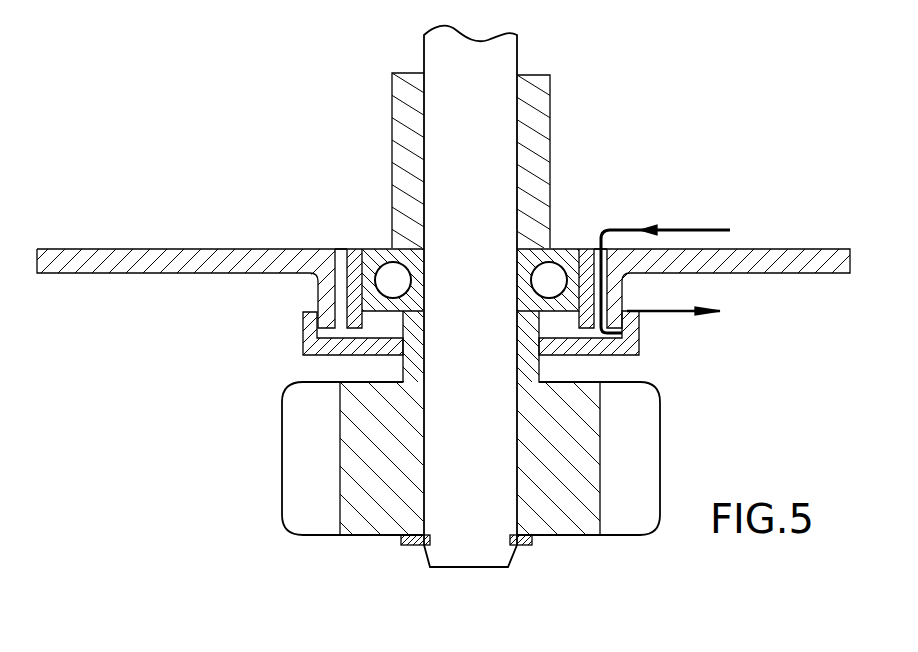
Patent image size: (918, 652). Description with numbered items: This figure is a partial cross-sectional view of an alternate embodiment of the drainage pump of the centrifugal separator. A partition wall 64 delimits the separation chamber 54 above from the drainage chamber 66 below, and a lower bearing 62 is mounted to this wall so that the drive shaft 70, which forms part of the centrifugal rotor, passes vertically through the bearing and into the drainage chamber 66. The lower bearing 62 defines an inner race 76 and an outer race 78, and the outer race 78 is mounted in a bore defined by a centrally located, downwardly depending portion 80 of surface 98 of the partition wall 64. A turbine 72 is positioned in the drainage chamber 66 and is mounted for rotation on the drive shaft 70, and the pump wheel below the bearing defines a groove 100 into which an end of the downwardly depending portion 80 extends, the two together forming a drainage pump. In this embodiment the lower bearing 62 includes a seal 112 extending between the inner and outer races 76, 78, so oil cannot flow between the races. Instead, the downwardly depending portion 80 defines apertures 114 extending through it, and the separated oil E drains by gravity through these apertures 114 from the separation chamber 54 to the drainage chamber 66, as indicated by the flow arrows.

The separation chamber 54 is at (730, 49).
The surface 98 is at (112, 249).
The partition wall 64 is at (110, 283).
The apertures 114 is at (338, 249).
The downwardly depending portion 80 is at (316, 292).
The inner race 76 is at (418, 245).
The seal 112 is at (553, 248).
The outer race 78 is at (378, 260).
The lower bearing 62 is at (580, 234).
The groove 100 is at (387, 325).
The turbine 72 is at (357, 537).
The drainage chamber 66 is at (785, 429).
The drive shaft 70 is at (444, 570).
The separated oil E is at (693, 227).